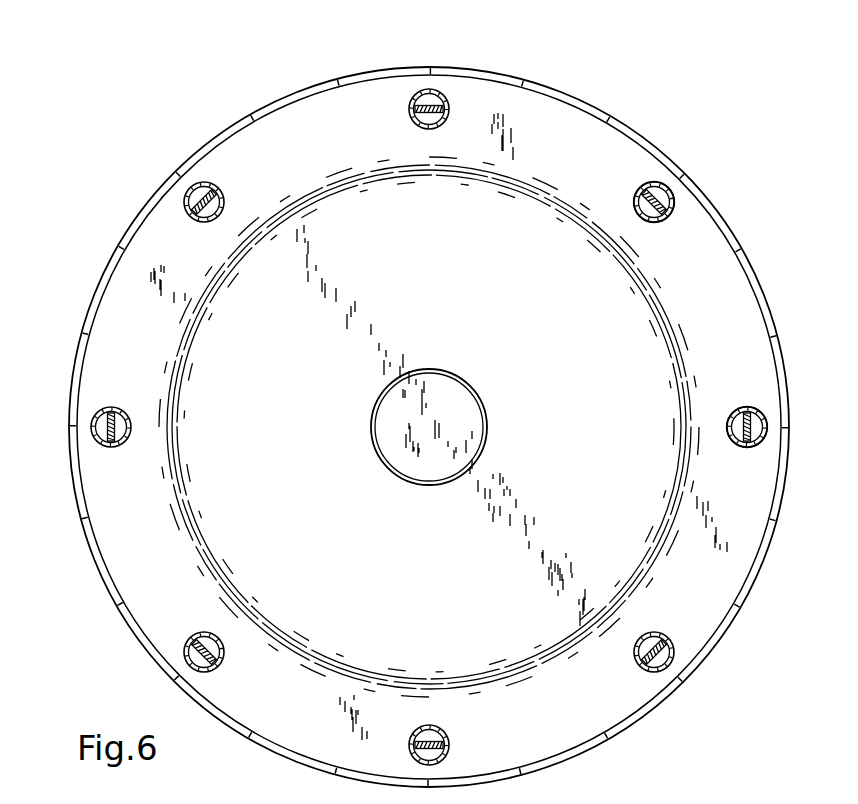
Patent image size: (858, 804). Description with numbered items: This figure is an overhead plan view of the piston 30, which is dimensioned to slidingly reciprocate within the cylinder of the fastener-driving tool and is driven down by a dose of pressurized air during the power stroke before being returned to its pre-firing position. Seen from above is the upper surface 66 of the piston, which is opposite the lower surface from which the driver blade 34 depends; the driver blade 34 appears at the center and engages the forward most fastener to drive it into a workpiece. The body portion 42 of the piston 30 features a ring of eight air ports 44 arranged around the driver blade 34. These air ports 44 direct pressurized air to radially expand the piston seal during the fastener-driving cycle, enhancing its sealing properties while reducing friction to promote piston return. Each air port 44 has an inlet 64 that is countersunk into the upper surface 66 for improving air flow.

The piston 30 is at (545, 90).
The driver blade 34 is at (459, 419).
The body portion 42 is at (606, 450).
The air ports 44 is at (660, 183).
The inlet 64 is at (641, 188).
The upper surface 66 is at (723, 320).